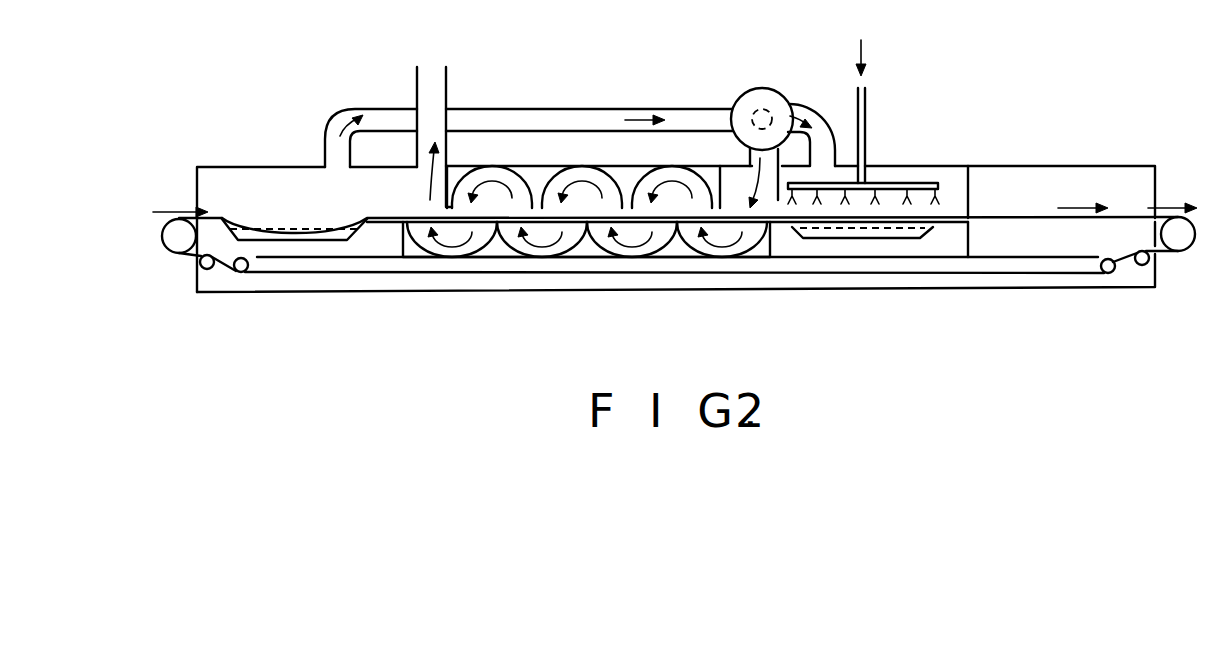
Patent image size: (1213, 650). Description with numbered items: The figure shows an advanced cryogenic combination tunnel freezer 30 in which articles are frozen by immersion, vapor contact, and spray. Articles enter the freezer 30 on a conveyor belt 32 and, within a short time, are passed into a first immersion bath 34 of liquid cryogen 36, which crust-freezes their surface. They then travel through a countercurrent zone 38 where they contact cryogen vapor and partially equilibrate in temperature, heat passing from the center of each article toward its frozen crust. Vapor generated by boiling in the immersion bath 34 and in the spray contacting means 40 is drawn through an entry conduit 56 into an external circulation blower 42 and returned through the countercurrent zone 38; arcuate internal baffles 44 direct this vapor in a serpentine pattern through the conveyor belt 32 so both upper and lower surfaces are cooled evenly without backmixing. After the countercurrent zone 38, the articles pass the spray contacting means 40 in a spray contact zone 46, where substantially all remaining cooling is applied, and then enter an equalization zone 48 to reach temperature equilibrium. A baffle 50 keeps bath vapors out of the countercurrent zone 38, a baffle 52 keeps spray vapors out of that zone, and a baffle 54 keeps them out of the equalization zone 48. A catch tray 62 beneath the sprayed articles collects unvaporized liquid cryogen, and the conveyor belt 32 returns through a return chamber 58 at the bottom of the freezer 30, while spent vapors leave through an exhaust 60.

The freezer 30 is at (1028, 163).
The conveyor belt 32 is at (218, 218).
The immersion bath 34 is at (347, 236).
The liquid cryogen 36 is at (288, 228).
The countercurrent zone 38 is at (770, 292).
The spray contacting means 40 is at (889, 185).
The circulation blower 42 is at (753, 88).
The internal baffles 44 is at (597, 238).
The spray contact zone 46 is at (968, 292).
The equalization zone 48 is at (968, 292).
The baffle 50 is at (403, 197).
The baffle 52 is at (791, 136).
The baffle 54 is at (972, 188).
The entry conduit 56 is at (816, 140).
The return chamber 58 is at (213, 277).
The exhaust 60 is at (433, 72).
The catch tray 62 is at (927, 233).